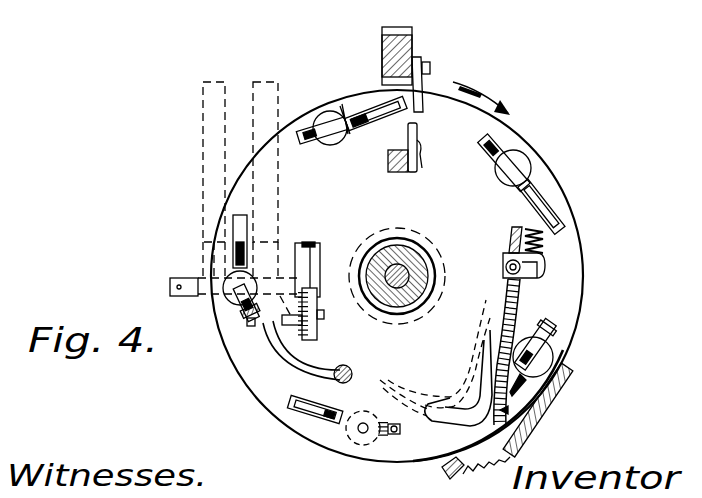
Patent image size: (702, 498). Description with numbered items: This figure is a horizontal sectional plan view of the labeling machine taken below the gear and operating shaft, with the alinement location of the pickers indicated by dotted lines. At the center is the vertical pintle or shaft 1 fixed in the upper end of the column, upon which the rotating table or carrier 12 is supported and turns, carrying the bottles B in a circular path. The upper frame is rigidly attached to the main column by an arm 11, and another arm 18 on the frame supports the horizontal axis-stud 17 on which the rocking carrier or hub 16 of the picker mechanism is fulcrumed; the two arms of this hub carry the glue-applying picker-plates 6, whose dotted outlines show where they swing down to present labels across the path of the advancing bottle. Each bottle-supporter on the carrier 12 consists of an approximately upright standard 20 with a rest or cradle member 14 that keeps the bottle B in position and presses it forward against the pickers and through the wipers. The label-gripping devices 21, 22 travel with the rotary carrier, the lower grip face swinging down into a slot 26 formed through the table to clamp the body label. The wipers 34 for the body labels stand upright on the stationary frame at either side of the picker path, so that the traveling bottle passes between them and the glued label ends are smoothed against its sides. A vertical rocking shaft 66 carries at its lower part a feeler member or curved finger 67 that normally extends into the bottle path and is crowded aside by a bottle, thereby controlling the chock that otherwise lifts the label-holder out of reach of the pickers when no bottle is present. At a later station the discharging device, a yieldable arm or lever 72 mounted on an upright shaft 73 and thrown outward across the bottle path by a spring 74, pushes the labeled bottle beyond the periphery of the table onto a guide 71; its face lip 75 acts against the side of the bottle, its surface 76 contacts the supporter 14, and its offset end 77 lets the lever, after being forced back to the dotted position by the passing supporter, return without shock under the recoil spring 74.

The vertical pintle or shaft 1 is at (380, 268).
The glue-applying picker-plates 6 is at (214, 84).
The arm 11 is at (394, 40).
The rotating table or carrier 12 is at (581, 281).
The rest or cradle member 14 is at (243, 312).
The rocking carrier or hub 16 is at (215, 294).
The horizontal axis-stud 17 is at (170, 288).
The arm 18 is at (304, 279).
The upright standard 20 is at (250, 324).
The label-gripping device 21 is at (238, 296).
The label-gripping device 22 is at (240, 262).
The slot 26 is at (300, 416).
The wipers for body labels 34 is at (420, 90).
The vertical rocking shaft 66 is at (353, 374).
The feeler member or curved finger 67 is at (298, 366).
The guide 71 is at (464, 472).
The arm or lever 72 is at (553, 334).
The upright shaft 73 is at (508, 262).
The spring 74 is at (532, 248).
The face lip 75 is at (508, 410).
The surface 76 is at (512, 397).
The offset end 77 is at (470, 418).
The bottle B is at (232, 282).